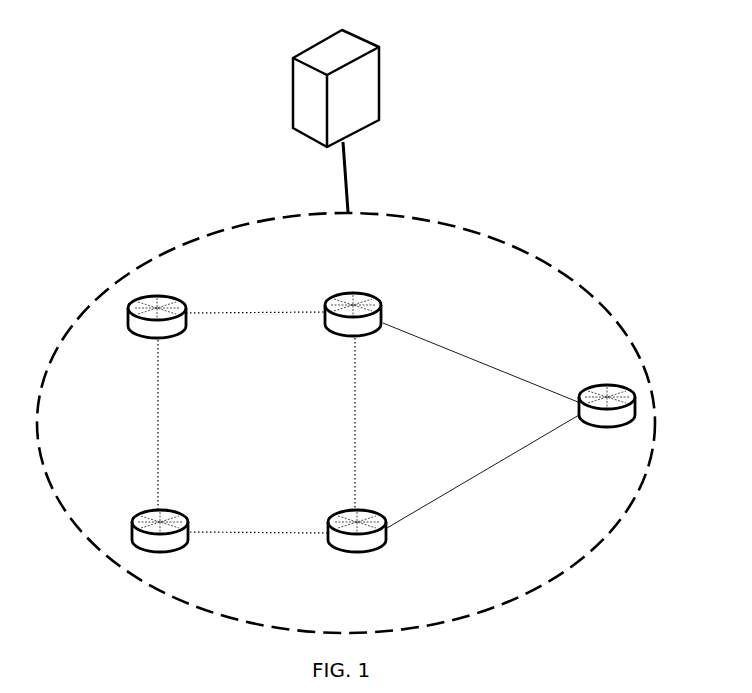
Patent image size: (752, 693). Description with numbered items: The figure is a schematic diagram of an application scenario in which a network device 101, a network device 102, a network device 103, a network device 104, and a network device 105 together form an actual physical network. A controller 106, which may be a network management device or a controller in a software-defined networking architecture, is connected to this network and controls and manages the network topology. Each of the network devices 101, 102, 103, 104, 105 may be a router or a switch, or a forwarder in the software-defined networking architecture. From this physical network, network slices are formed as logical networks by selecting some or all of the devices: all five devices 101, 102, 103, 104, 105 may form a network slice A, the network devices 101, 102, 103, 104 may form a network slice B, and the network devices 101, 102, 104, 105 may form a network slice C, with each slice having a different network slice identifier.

The network device 101 is at (170, 293).
The network device 102 is at (383, 307).
The network device 103 is at (190, 522).
The network device 104 is at (388, 537).
The network device 105 is at (595, 385).
The controller 106 is at (382, 92).